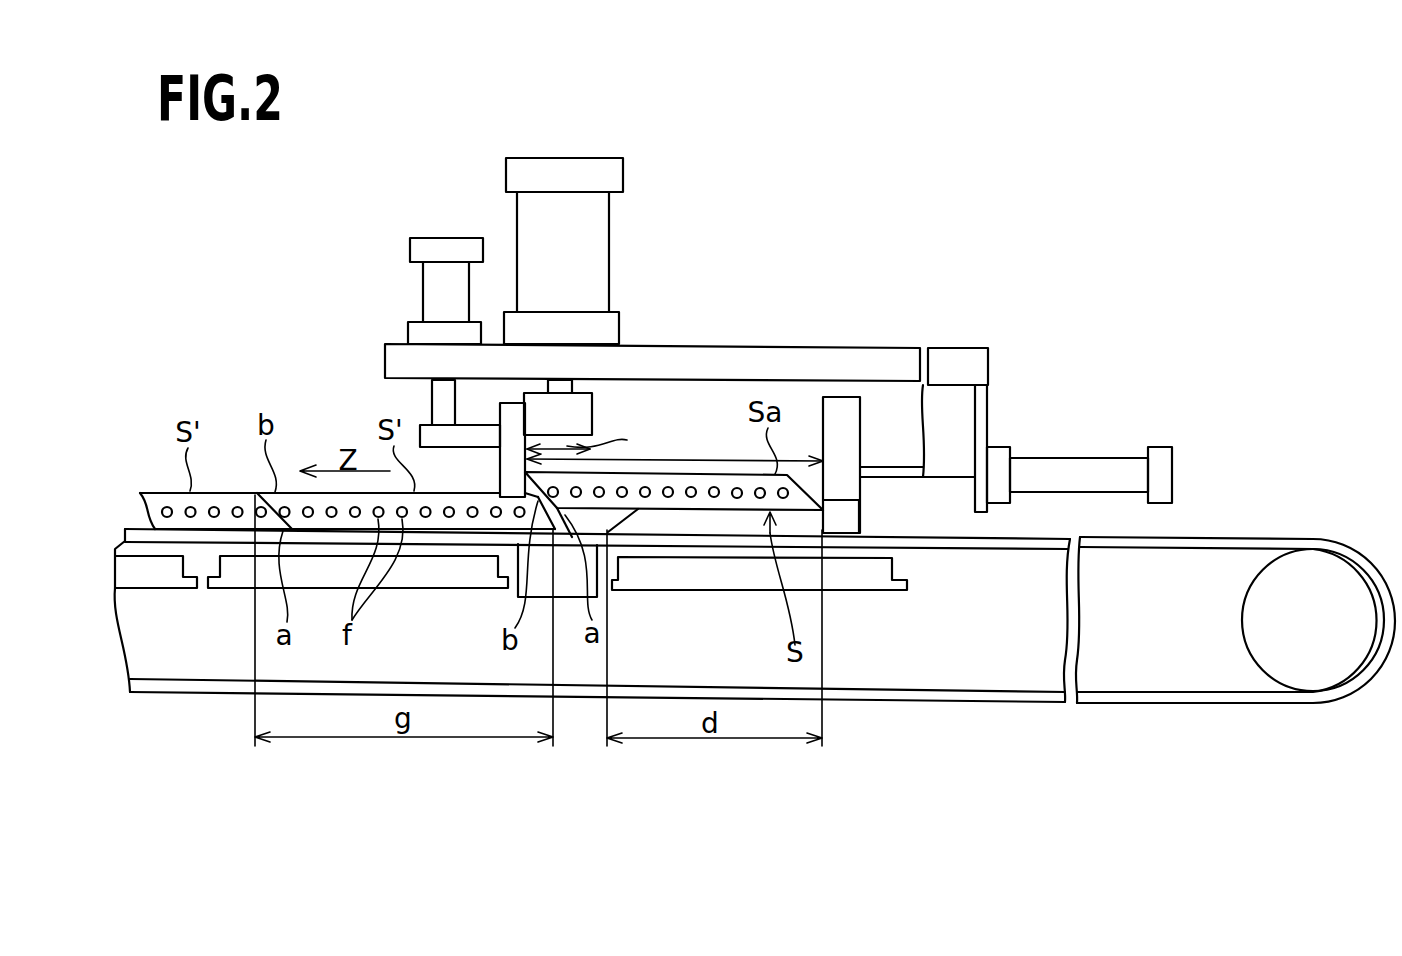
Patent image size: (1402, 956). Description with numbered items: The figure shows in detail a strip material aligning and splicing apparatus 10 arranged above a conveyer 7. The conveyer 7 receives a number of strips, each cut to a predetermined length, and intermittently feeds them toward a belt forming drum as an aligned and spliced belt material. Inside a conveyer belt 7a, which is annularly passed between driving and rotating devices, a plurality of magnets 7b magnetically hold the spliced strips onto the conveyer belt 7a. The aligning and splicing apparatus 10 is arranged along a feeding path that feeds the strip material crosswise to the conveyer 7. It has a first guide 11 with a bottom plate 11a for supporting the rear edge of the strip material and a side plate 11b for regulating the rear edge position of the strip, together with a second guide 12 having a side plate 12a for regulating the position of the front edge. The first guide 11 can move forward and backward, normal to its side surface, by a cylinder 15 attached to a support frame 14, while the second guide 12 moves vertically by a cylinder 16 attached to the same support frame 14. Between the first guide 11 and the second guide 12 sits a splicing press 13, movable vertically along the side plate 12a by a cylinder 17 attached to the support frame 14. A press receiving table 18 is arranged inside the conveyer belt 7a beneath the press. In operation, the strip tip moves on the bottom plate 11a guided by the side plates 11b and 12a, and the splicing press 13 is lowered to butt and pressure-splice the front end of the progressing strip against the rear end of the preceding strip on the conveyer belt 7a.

The conveyer 7 is at (1215, 538).
The conveyer belt 7a is at (1155, 551).
The magnets 7b is at (440, 590).
The aligning and splicing apparatus 10 is at (851, 348).
The first guide 11 is at (860, 444).
The bottom plate 11a is at (648, 535).
The side plate 11b is at (852, 521).
The second guide 12 is at (500, 410).
The side plate 12a is at (499, 472).
The splicing press 13 is at (592, 410).
The support frame 14 is at (706, 347).
The cylinder 15 is at (1100, 457).
The cylinder 16 is at (455, 240).
The cylinder 17 is at (590, 158).
The press receiving table 18 is at (575, 598).